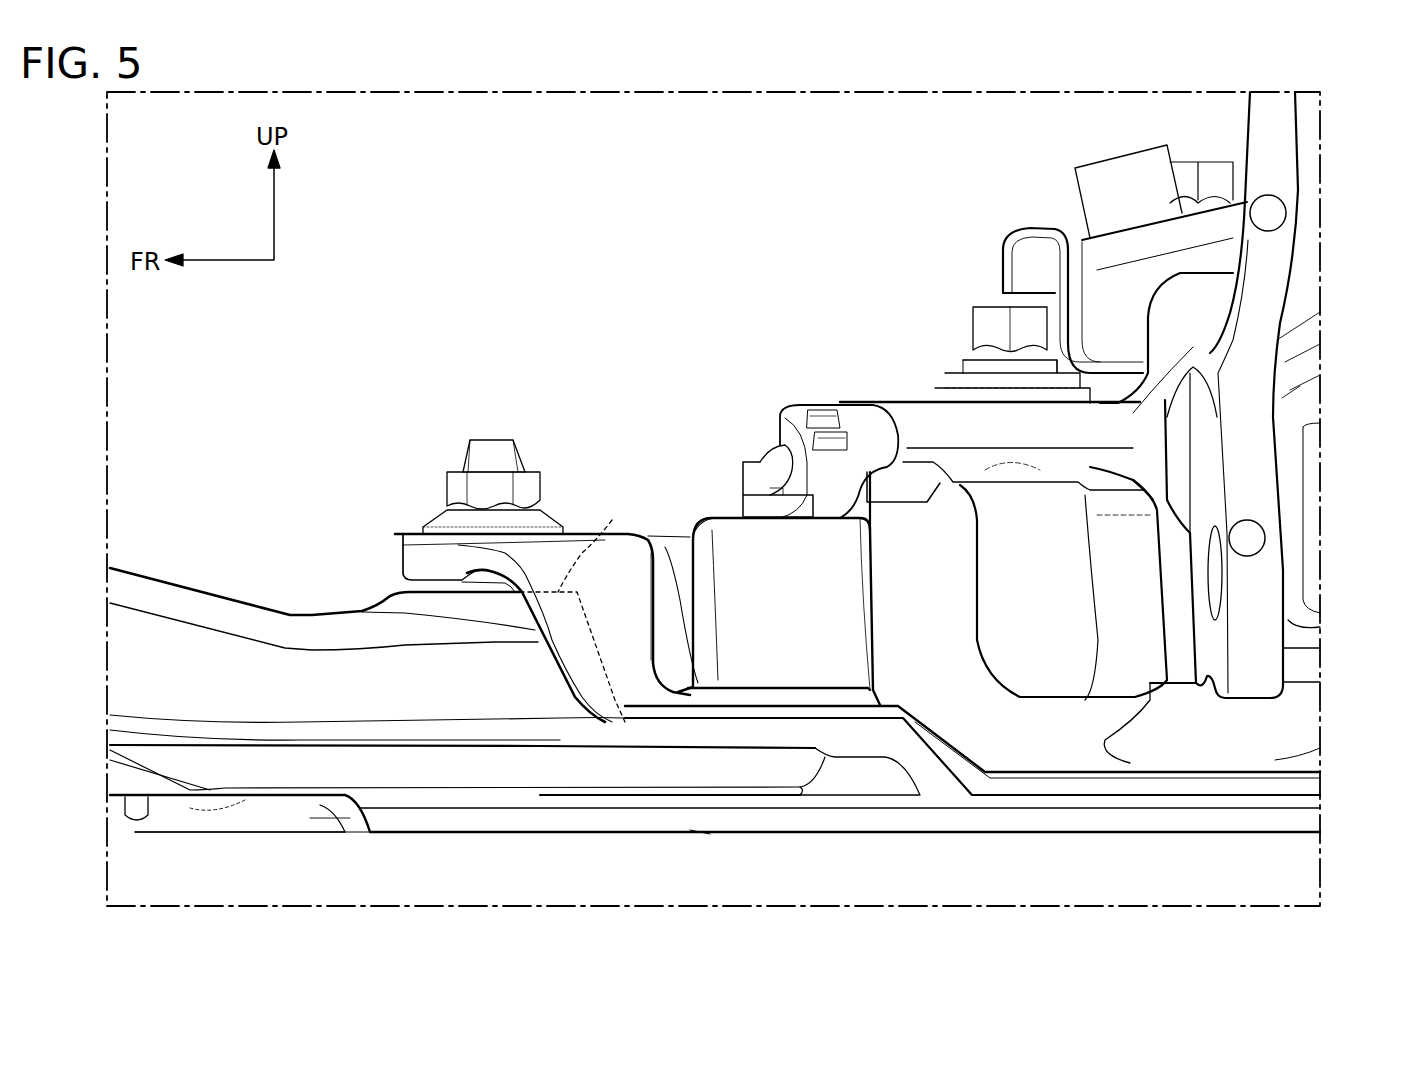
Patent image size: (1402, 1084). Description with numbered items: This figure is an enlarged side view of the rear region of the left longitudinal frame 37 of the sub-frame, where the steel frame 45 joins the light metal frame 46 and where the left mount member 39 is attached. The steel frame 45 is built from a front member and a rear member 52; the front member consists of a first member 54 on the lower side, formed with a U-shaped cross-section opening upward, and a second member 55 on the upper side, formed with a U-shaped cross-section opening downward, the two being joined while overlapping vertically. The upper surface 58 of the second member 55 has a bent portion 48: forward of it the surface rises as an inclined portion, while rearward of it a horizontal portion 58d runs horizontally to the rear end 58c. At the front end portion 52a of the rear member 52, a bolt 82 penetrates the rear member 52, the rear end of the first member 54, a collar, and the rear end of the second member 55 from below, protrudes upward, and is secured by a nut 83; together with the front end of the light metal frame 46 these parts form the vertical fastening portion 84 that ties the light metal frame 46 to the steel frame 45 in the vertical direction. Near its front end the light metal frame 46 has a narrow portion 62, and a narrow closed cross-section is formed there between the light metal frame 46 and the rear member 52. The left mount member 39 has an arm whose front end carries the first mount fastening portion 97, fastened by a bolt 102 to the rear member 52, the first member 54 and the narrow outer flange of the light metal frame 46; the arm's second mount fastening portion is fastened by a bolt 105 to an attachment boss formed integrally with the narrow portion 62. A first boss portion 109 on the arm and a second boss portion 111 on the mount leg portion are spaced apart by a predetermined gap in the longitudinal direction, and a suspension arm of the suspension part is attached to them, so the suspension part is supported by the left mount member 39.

The longitudinal frame 37 is at (345, 524).
The left mount member 39 is at (1253, 127).
The steel frame 45 is at (414, 834).
The light metal frame 46 is at (1130, 567).
The bent portion 48 is at (313, 630).
The rear member 52 is at (962, 820).
The front end portion of the rear member 52a is at (535, 555).
The first member 54 is at (305, 775).
The second member 55 is at (138, 625).
The upper surface 58 is at (222, 594).
The rear end 58c is at (553, 860).
The horizontal portion 58d is at (460, 587).
The narrow portion 62 is at (1000, 432).
The bolt 82 is at (485, 446).
The nut 83 is at (500, 480).
The vertical fastening portion 84 is at (465, 537).
The first mount fastening portion 97 is at (785, 592).
The bolt 102 is at (785, 500).
The bolt 105 is at (990, 315).
The first boss portion 109 is at (845, 480).
The second boss portion 111 is at (1265, 580).